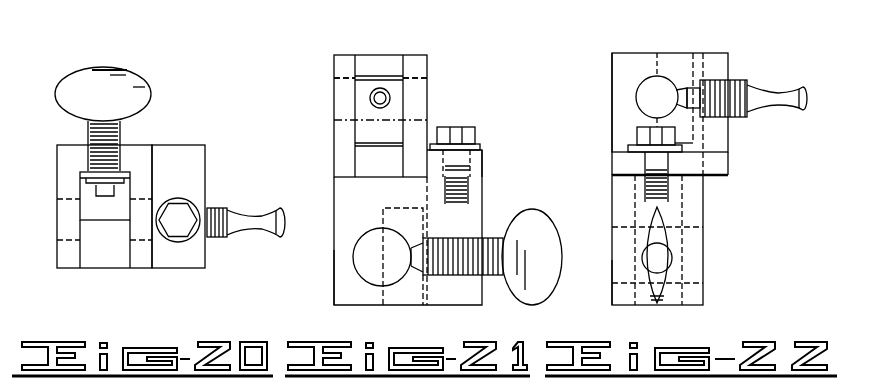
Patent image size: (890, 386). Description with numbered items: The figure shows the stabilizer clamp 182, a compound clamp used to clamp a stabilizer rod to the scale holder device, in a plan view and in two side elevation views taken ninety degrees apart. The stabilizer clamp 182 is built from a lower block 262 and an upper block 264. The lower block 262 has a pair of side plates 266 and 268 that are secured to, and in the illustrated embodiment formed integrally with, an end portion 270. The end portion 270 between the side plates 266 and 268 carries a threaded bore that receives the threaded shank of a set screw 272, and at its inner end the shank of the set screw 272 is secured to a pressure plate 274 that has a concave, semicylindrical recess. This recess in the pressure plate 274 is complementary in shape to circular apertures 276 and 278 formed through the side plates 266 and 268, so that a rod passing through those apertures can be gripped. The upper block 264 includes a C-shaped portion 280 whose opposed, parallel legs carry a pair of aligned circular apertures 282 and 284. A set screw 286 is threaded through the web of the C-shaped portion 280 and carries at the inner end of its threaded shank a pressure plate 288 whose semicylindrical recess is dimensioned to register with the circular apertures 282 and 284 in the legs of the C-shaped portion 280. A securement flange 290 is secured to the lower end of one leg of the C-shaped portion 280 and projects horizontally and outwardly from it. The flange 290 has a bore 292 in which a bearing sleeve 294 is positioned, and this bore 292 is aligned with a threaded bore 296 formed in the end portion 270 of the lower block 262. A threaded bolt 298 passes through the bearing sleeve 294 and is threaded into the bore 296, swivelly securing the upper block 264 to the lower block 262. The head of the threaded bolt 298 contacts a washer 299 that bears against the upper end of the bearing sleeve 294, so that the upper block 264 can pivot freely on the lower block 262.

In FIG. 20, the stabilizer clamp 182 is at (190, 143).
In FIG. 21, the lower block 262 is at (343, 267).
In FIG. 20, the upper block 264 is at (135, 155).
In FIG. 21, the upper block 264 is at (342, 153).
In FIG. 22, the upper block 264 is at (708, 53).
In FIG. 21, the side plate 266 is at (348, 210).
In FIG. 22, the side plate 266 is at (620, 201).
In FIG. 22, the side plate 268 is at (693, 194).
In FIG. 22, the end portion 270 is at (673, 216).
In FIG. 20, the set screw 272 is at (267, 207).
In FIG. 21, the set screw 272 is at (556, 262).
In FIG. 22, the set screw 272 is at (662, 259).
In FIG. 21, the pressure plate 274 is at (408, 283).
In FIG. 21, the circular aperture 276 is at (370, 272).
In FIG. 22, the circular aperture 276 is at (612, 275).
In FIG. 22, the circular aperture 278 is at (697, 282).
In FIG. 20, the C-shaped portion 280 is at (68, 167).
In FIG. 22, the C-shaped portion 280 is at (617, 72).
In FIG. 20, the circular aperture 282 is at (68, 237).
In FIG. 21, the circular aperture 282 is at (337, 87).
In FIG. 20, the circular aperture 284 is at (128, 241).
In FIG. 21, the circular aperture 284 is at (430, 88).
In FIG. 22, the circular aperture 284 is at (663, 77).
In FIG. 20, the set screw 286 is at (122, 66).
In FIG. 22, the set screw 286 is at (770, 88).
In FIG. 20, the pressure plate 288 is at (100, 211).
In FIG. 21, the pressure plate 288 is at (370, 62).
In FIG. 20, the securement flange 290 is at (178, 258).
In FIG. 21, the securement flange 290 is at (483, 160).
In FIG. 21, the bore 292 is at (447, 166).
In FIG. 21, the bearing sleeve 294 is at (483, 172).
In FIG. 21, the threaded bore 296 is at (470, 193).
In FIG. 21, the threaded bolt 298 is at (460, 128).
In FIG. 22, the threaded bolt 298 is at (637, 135).
In FIG. 21, the washer 299 is at (478, 147).
In FIG. 22, the washer 299 is at (633, 144).